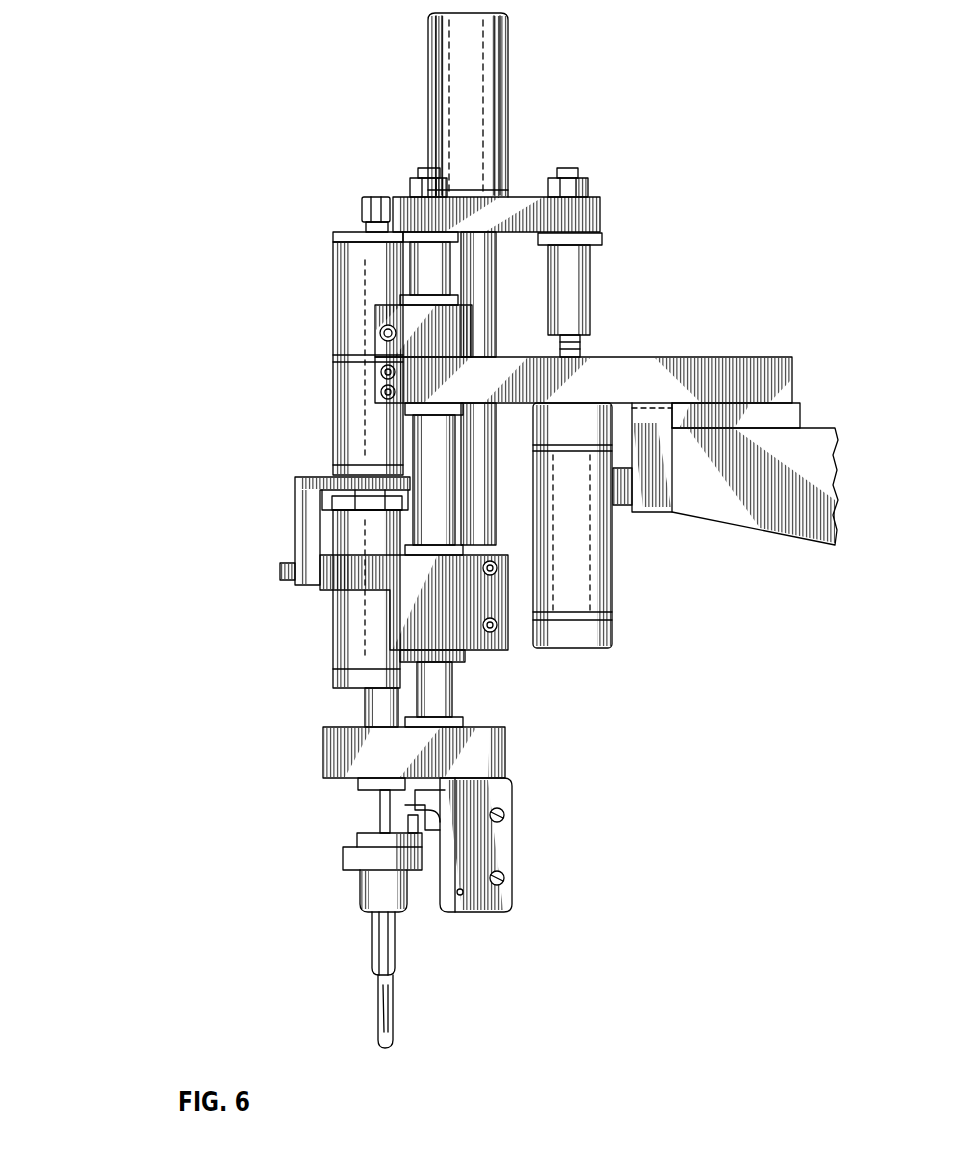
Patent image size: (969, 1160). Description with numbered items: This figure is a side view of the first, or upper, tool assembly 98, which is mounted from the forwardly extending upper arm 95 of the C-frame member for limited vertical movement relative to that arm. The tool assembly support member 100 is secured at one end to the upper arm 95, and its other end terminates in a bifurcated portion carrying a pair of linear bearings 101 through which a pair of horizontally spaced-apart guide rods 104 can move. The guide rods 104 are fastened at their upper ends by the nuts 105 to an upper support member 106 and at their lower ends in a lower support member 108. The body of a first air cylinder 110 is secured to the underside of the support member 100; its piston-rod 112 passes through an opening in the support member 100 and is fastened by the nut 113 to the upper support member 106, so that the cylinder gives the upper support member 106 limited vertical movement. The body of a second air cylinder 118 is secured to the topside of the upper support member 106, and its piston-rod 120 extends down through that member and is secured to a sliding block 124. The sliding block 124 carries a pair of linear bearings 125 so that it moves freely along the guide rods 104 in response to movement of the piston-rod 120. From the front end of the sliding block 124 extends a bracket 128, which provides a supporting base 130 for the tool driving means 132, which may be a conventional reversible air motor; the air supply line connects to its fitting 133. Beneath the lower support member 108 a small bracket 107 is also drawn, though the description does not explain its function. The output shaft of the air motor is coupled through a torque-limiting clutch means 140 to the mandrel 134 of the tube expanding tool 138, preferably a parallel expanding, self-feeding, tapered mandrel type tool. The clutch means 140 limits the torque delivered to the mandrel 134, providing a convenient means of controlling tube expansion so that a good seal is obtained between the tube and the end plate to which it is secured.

The second air cylinder 118 is at (495, 73).
The upper support member 106 is at (494, 207).
The nuts 105 is at (410, 182).
The nut 113 is at (586, 194).
The fitting 133 is at (362, 210).
The piston-rod 120 is at (480, 273).
The guide rods 104 is at (420, 262).
The linear bearings 101 is at (440, 300).
The piston-rod 112 is at (575, 346).
The tool assembly support member 100 is at (640, 364).
The first tool assembly 98 is at (258, 358).
The tool driving means 132 is at (333, 385).
The supporting base 130 is at (325, 477).
The bracket 128 is at (303, 515).
The upper arm 95 is at (700, 497).
The first air cylinder 110 is at (590, 614).
The torque-limiting clutch means 140 is at (355, 610).
The sliding block 124 is at (465, 638).
The linear bearings 125 is at (462, 660).
The lower support member 108 is at (500, 760).
The bracket 107 is at (450, 786).
The mandrel 134 is at (380, 815).
The tube expanding tool 138 is at (277, 978).